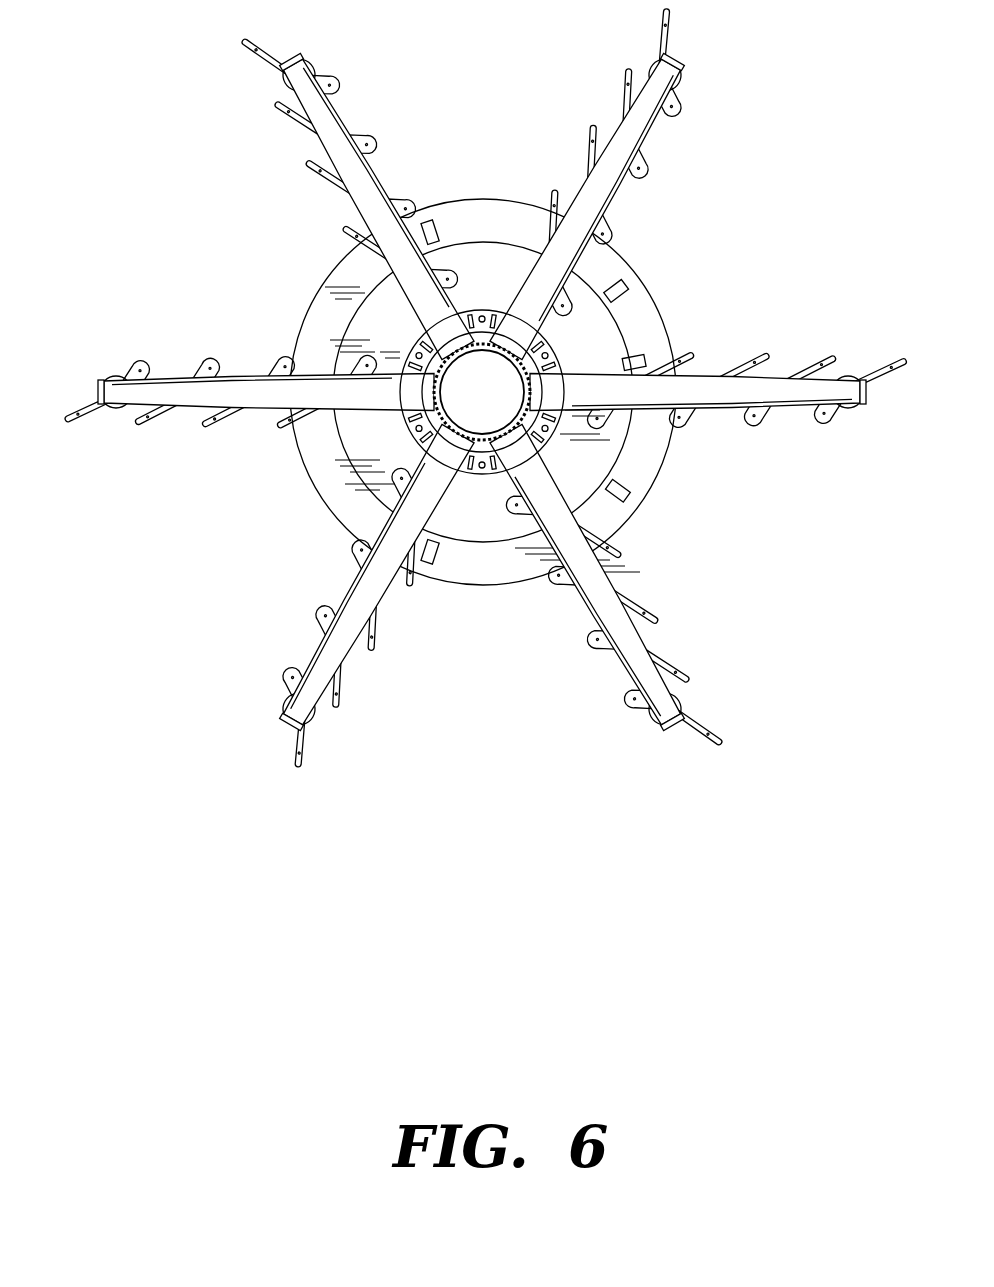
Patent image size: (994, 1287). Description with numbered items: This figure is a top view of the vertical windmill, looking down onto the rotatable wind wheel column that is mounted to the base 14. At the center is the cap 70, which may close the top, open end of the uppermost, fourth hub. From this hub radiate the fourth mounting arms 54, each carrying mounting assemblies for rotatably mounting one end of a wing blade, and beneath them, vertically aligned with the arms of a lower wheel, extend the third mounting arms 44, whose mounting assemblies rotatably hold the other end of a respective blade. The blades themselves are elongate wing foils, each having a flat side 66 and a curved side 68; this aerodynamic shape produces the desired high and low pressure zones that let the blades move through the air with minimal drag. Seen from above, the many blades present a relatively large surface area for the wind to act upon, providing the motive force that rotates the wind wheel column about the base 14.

The base 14 is at (312, 297).
The third mounting arms 44 is at (618, 196).
The fourth mounting arms 54 is at (342, 116).
The flat side 66 is at (92, 401).
The curved side 68 is at (262, 68).
The cap 70 is at (499, 407).